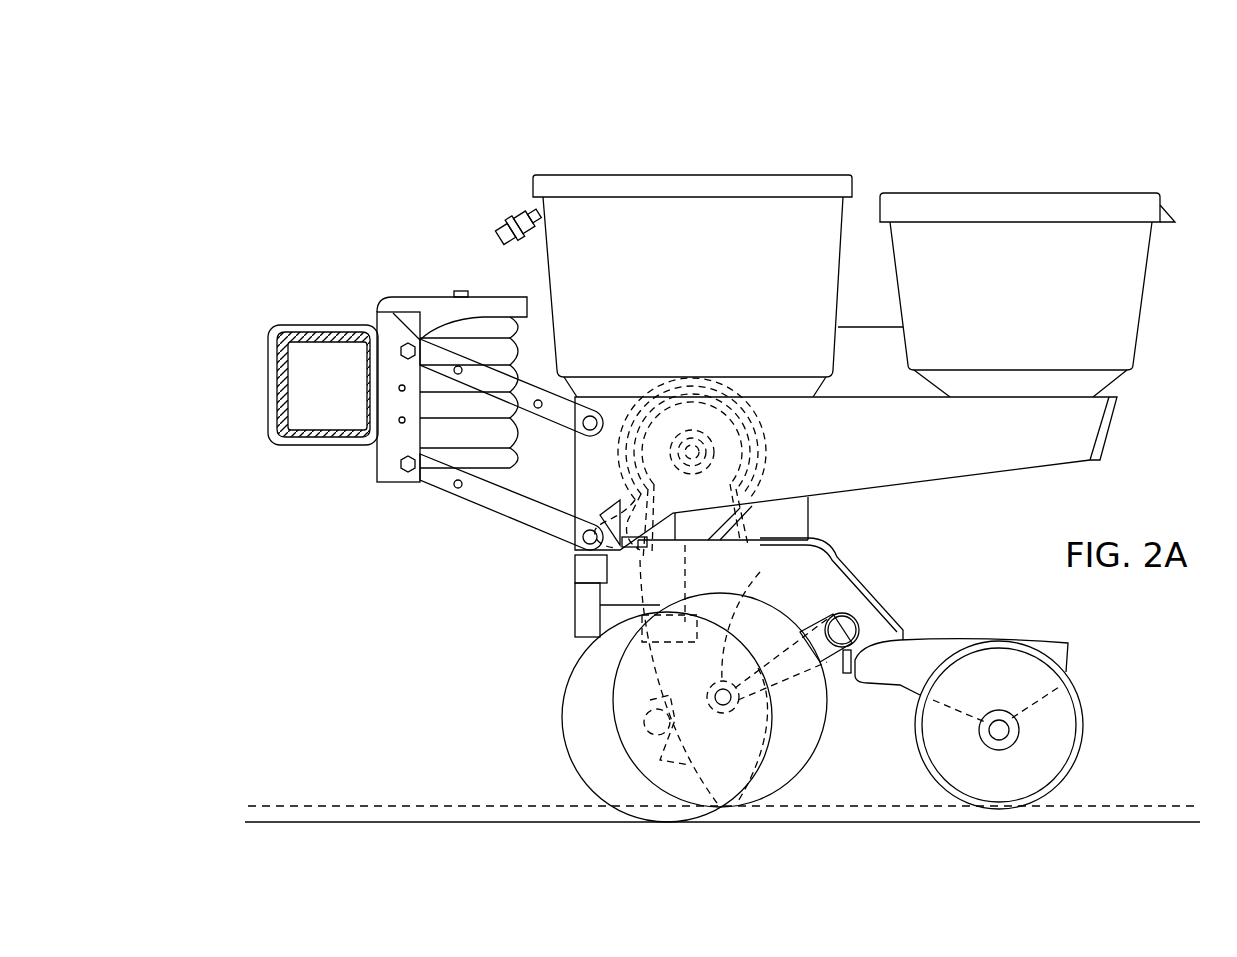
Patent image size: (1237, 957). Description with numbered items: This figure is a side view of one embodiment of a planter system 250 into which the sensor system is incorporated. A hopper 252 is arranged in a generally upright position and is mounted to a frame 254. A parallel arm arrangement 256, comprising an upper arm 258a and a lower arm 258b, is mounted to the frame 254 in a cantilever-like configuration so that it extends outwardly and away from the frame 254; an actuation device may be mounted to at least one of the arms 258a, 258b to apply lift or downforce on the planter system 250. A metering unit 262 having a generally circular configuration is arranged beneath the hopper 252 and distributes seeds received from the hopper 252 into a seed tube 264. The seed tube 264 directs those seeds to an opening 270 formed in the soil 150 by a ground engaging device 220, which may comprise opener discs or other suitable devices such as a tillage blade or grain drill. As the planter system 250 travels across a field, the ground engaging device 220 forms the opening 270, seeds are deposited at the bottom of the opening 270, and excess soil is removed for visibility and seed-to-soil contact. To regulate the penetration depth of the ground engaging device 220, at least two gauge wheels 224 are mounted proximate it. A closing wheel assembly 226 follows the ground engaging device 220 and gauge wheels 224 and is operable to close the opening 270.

The soil 150 is at (311, 806).
The ground engaging device 220 is at (560, 712).
The gauge wheels 224 is at (775, 612).
The closing wheel assembly 226 is at (1055, 740).
The planter system 250 is at (492, 114).
The hopper 252 is at (630, 183).
The frame 254 is at (1045, 432).
The parallel arm arrangement 256 is at (417, 503).
The upper arm 258a is at (527, 395).
The lower arm 258b is at (480, 490).
The metering unit 262 is at (782, 452).
The seed tube 264 is at (750, 584).
The opening 270 is at (797, 823).